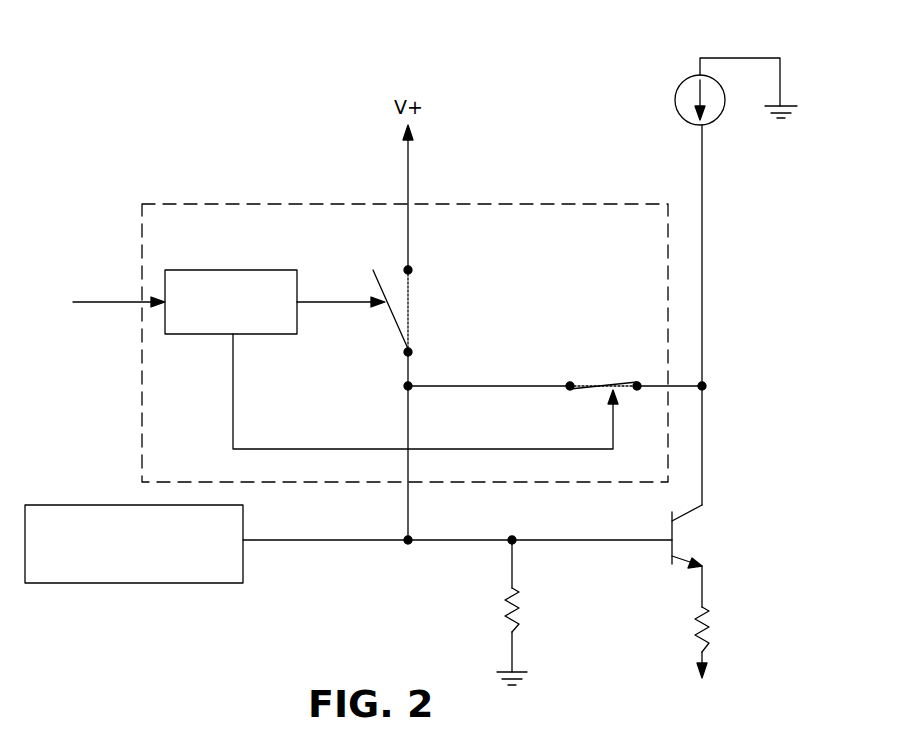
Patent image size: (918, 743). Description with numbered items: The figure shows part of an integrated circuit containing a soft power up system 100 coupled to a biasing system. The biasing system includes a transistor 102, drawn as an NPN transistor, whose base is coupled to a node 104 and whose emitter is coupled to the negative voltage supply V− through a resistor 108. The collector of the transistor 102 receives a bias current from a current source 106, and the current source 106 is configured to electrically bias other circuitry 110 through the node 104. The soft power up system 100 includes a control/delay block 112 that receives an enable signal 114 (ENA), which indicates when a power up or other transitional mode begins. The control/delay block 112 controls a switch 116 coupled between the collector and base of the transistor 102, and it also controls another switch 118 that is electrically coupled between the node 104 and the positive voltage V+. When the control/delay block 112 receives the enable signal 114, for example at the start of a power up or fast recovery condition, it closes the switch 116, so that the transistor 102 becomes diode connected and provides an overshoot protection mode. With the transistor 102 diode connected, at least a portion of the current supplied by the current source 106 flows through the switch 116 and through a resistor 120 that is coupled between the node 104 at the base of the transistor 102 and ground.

The soft power up system 100 is at (553, 70).
The transistor 102 is at (604, 204).
The node 104 is at (375, 542).
The current source 106 is at (680, 111).
The resistor 108 is at (715, 620).
The other circuitry 110 is at (192, 585).
The control/delay block 112 is at (237, 270).
The enable signal 114 is at (103, 304).
The switch 116 is at (586, 360).
The switch 118 is at (447, 298).
The resistor 120 is at (505, 605).